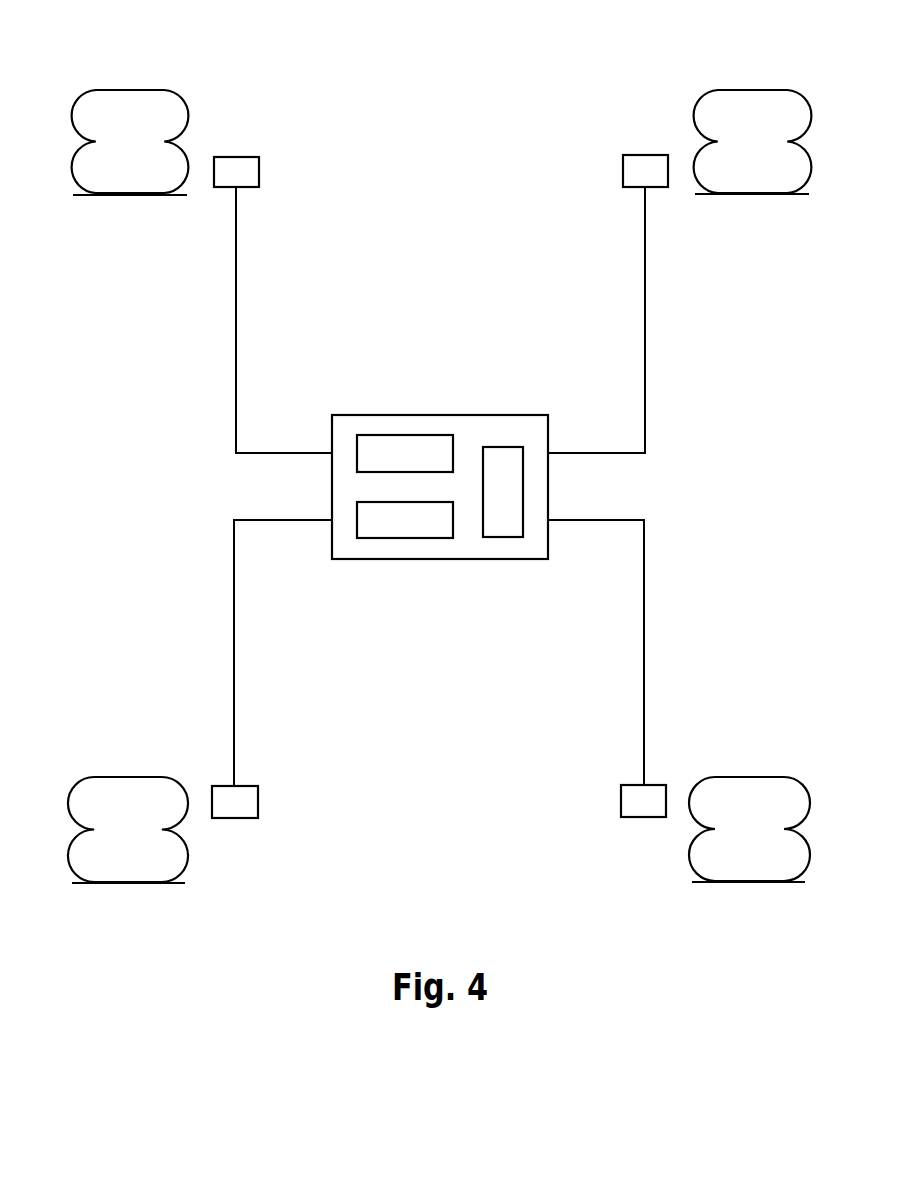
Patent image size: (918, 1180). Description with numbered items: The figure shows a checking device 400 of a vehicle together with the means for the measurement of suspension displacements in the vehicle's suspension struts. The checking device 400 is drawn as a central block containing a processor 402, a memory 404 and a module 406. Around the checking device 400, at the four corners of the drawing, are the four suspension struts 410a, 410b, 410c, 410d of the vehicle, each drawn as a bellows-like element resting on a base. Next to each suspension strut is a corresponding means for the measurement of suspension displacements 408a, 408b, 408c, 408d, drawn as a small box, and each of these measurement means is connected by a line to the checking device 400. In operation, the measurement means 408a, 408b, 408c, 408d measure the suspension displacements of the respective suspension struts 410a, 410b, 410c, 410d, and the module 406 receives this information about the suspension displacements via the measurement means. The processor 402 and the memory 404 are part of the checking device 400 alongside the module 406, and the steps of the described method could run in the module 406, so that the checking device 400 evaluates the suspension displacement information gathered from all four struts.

The checking device 400 is at (350, 415).
The processor 402 is at (431, 435).
The memory 404 is at (523, 487).
The module 406 is at (389, 538).
The means for the measurement of suspension displacements 408a is at (259, 170).
The means for the measurement of suspension displacements 408b is at (623, 172).
The means for the measurement of suspension displacements 408c is at (258, 800).
The means for the measurement of suspension displacements 408d is at (621, 800).
The suspension strut 410a is at (127, 90).
The suspension strut 410b is at (748, 90).
The suspension strut 410c is at (127, 777).
The suspension strut 410d is at (745, 777).